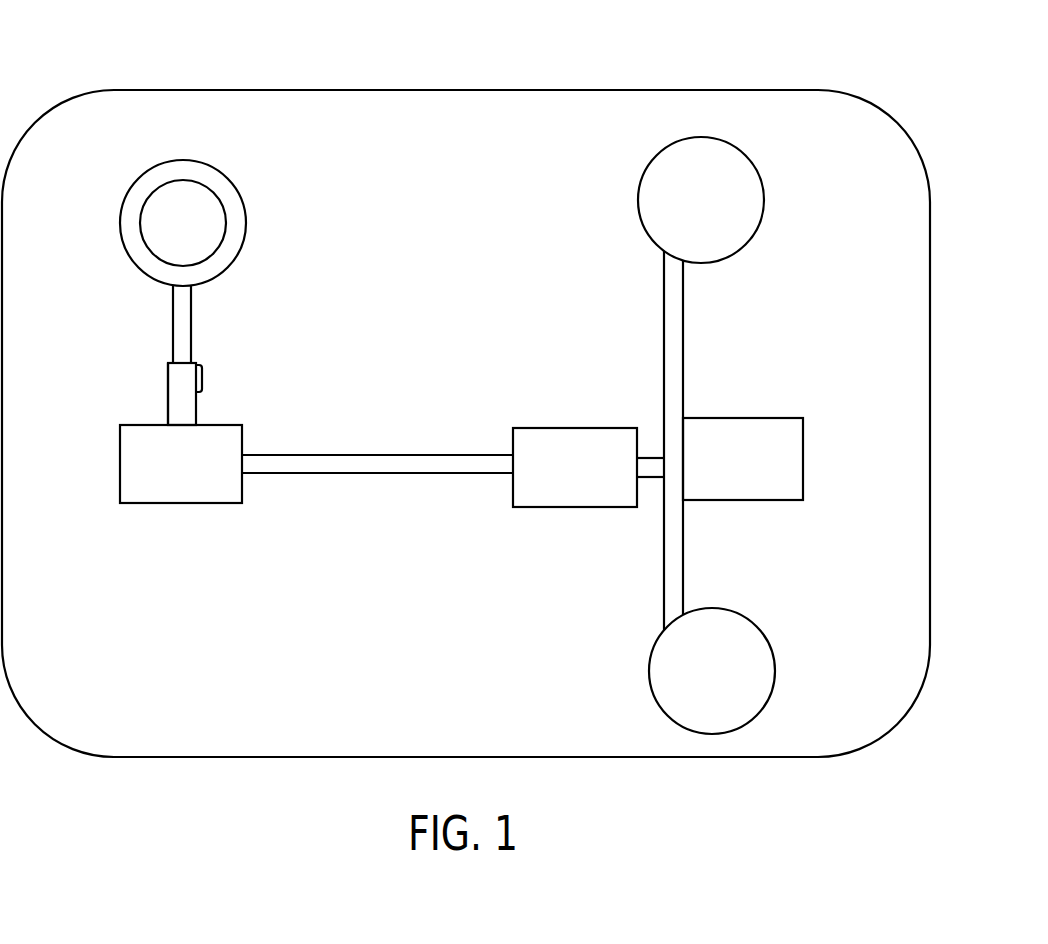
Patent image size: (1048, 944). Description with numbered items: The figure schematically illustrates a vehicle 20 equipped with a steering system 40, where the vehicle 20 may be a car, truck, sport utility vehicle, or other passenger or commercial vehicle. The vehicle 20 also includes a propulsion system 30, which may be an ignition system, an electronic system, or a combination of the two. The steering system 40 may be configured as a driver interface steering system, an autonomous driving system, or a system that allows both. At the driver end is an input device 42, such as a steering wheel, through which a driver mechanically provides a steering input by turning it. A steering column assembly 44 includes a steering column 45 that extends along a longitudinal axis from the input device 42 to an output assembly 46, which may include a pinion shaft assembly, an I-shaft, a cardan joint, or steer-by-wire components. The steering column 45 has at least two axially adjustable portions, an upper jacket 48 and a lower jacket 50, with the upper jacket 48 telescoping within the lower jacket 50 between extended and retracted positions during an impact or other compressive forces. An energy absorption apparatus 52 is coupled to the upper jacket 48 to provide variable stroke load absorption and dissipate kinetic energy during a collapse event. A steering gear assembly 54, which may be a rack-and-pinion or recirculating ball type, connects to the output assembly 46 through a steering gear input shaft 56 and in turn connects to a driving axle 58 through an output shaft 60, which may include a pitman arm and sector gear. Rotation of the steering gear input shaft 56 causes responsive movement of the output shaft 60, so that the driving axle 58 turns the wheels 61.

The vehicle 20 is at (955, 119).
The propulsion system 30 is at (755, 474).
The steering system 40 is at (815, 194).
The input device 42 is at (130, 192).
The steering column assembly 44 is at (127, 325).
The steering column 45 is at (153, 373).
The output assembly 46 is at (194, 480).
The upper jacket 48 is at (207, 317).
The lower jacket 50 is at (212, 408).
The energy absorption apparatus 52 is at (218, 373).
The steering gear assembly 54 is at (587, 484).
The steering gear input shaft 56 is at (492, 462).
The driving axle 58 is at (675, 539).
The output shaft 60 is at (655, 459).
The wheels 61 is at (742, 245).